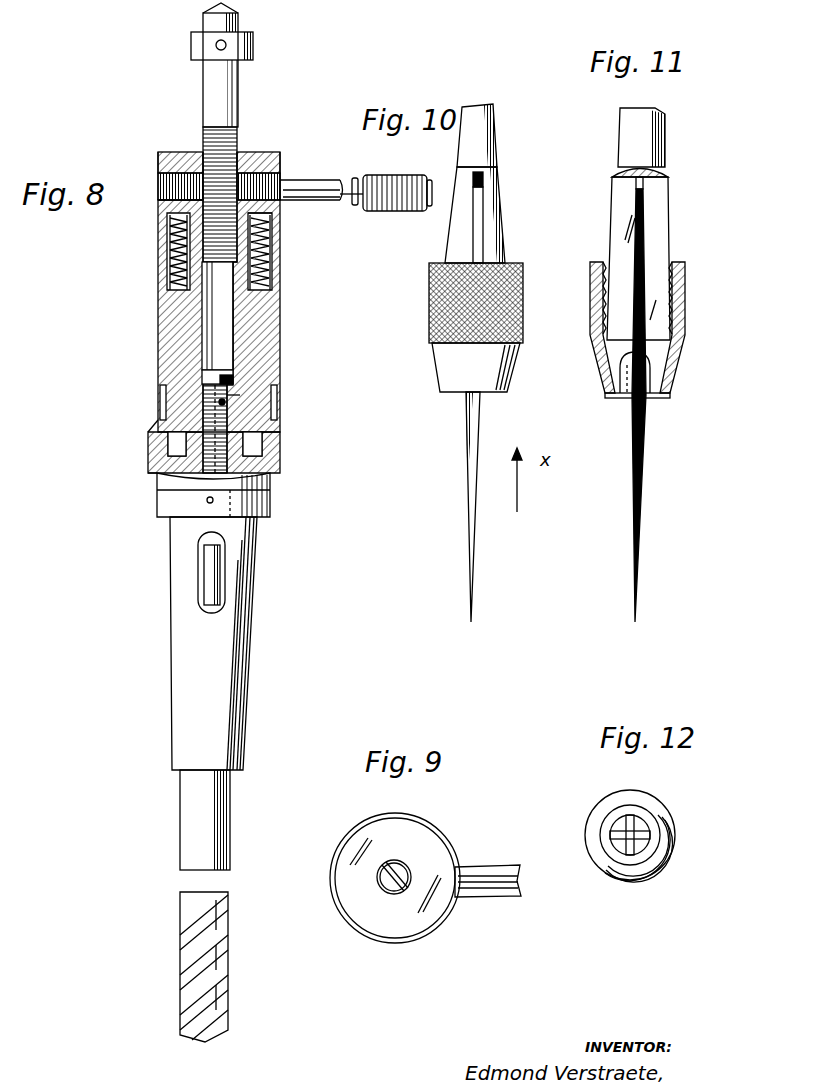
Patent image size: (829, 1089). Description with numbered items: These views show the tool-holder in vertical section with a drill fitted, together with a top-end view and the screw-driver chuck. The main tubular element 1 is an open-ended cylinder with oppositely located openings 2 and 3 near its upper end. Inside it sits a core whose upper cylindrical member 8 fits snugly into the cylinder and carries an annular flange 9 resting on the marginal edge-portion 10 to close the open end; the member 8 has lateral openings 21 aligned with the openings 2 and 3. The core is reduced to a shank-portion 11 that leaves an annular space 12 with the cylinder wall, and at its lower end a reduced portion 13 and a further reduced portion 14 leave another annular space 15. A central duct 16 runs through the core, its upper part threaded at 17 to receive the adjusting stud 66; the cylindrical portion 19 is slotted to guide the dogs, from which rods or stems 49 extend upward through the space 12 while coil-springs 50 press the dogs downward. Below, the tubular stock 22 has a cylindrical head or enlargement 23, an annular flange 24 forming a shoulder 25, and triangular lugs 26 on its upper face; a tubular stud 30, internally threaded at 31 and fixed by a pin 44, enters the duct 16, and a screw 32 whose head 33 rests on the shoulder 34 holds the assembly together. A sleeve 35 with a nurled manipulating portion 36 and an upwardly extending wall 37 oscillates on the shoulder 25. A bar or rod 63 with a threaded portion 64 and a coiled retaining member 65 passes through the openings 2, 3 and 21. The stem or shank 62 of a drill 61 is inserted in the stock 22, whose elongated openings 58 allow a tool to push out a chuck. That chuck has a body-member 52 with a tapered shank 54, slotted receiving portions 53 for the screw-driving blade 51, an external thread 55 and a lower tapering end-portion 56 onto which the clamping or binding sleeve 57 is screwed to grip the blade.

In FIG. 8, the main tubular element 1 is at (281, 323).
In FIG. 8, the opening 2 is at (284, 172).
In FIG. 8, the opening 3 is at (160, 200).
In FIG. 8, the upper cylindrical member 8 is at (247, 152).
In FIG. 8, the annular flange 9 is at (163, 152).
In FIG. 9, the annular flange 9 is at (437, 832).
In FIG. 8, the marginal edge-portion 10 is at (160, 158).
In FIG. 8, the shank-portion 11 is at (255, 243).
In FIG. 8, the annular space 12 is at (168, 265).
In FIG. 8, the reduced portion 13 is at (255, 400).
In FIG. 8, the further reduced portion 14 is at (250, 445).
In FIG. 8, the annular space 15 is at (161, 398).
In FIG. 8, the central duct 16 is at (228, 345).
In FIG. 9, the central duct 16 is at (386, 890).
In FIG. 8, the screw-threaded portion 17 is at (203, 152).
In FIG. 9, the screw-threaded portion 17 is at (400, 862).
In FIG. 8, the cylindrical portion 19 is at (258, 362).
In FIG. 8, the lateral openings 21 is at (160, 168).
In FIG. 8, the tubular tool or chuck-receiving stock 22 is at (175, 721).
In FIG. 8, the cylindrical head or enlargement 23 is at (262, 480).
In FIG. 8, the annular flange 24 is at (250, 505).
In FIG. 8, the annular off-set or shoulder 25 is at (268, 490).
In FIG. 8, the lugs 26 is at (240, 458).
In FIG. 8, the tubular member or stud 30 is at (232, 390).
In FIG. 8, the internally screw-threaded portion 31 is at (210, 392).
In FIG. 8, the screw 32 is at (236, 406).
In FIG. 8, the head of screw 33 is at (204, 372).
In FIG. 9, the head of screw 33 is at (410, 872).
In FIG. 8, the annular off-set or shoulder 34 is at (210, 384).
In FIG. 8, the sleeve 35 is at (160, 476).
In FIG. 8, the serrated or nurled manipulating portion 36 is at (148, 445).
In FIG. 8, the upwardly extending wall 37 is at (156, 425).
In FIG. 8, the pin 44 is at (212, 503).
In FIG. 8, the rods or stems 49 is at (169, 246).
In FIG. 8, the compressible coil-springs 50 is at (170, 226).
In FIG. 10, the screw-driving blade 51 is at (479, 218).
In FIG. 11, the screw-driving blade 51 is at (640, 520).
In FIG. 12, the screw-driving blade 51 is at (648, 822).
In FIG. 10, the body-member 52 is at (500, 242).
In FIG. 11, the body-member 52 is at (672, 218).
In FIG. 10, the slotted receiving portions 53 is at (484, 178).
In FIG. 11, the slotted receiving portions 53 is at (645, 180).
In FIG. 12, the slotted receiving portions 53 is at (612, 835).
In FIG. 10, the shank or stem 54 is at (492, 142).
In FIG. 11, the shank or stem 54 is at (660, 152).
In FIG. 11, the external screw-thread 55 is at (678, 290).
In FIG. 11, the lower tapering end-portion 56 is at (612, 366).
In FIG. 10, the clamping or binding sleeve 57 is at (430, 328).
In FIG. 11, the clamping or binding sleeve 57 is at (682, 338).
In FIG. 12, the clamping or binding sleeve 57 is at (668, 863).
In FIG. 8, the openings 58 is at (208, 578).
In FIG. 8, the drill 61 is at (185, 1000).
In FIG. 8, the stem or shank of drill 62 is at (185, 822).
In FIG. 8, the bar or rod 63 is at (325, 184).
In FIG. 9, the bar or rod 63 is at (496, 872).
In FIG. 8, the screw-threaded portion 64 is at (310, 200).
In FIG. 8, the removable retaining member 65 is at (395, 205).
In FIG. 8, the adjusting stud 66 is at (224, 84).